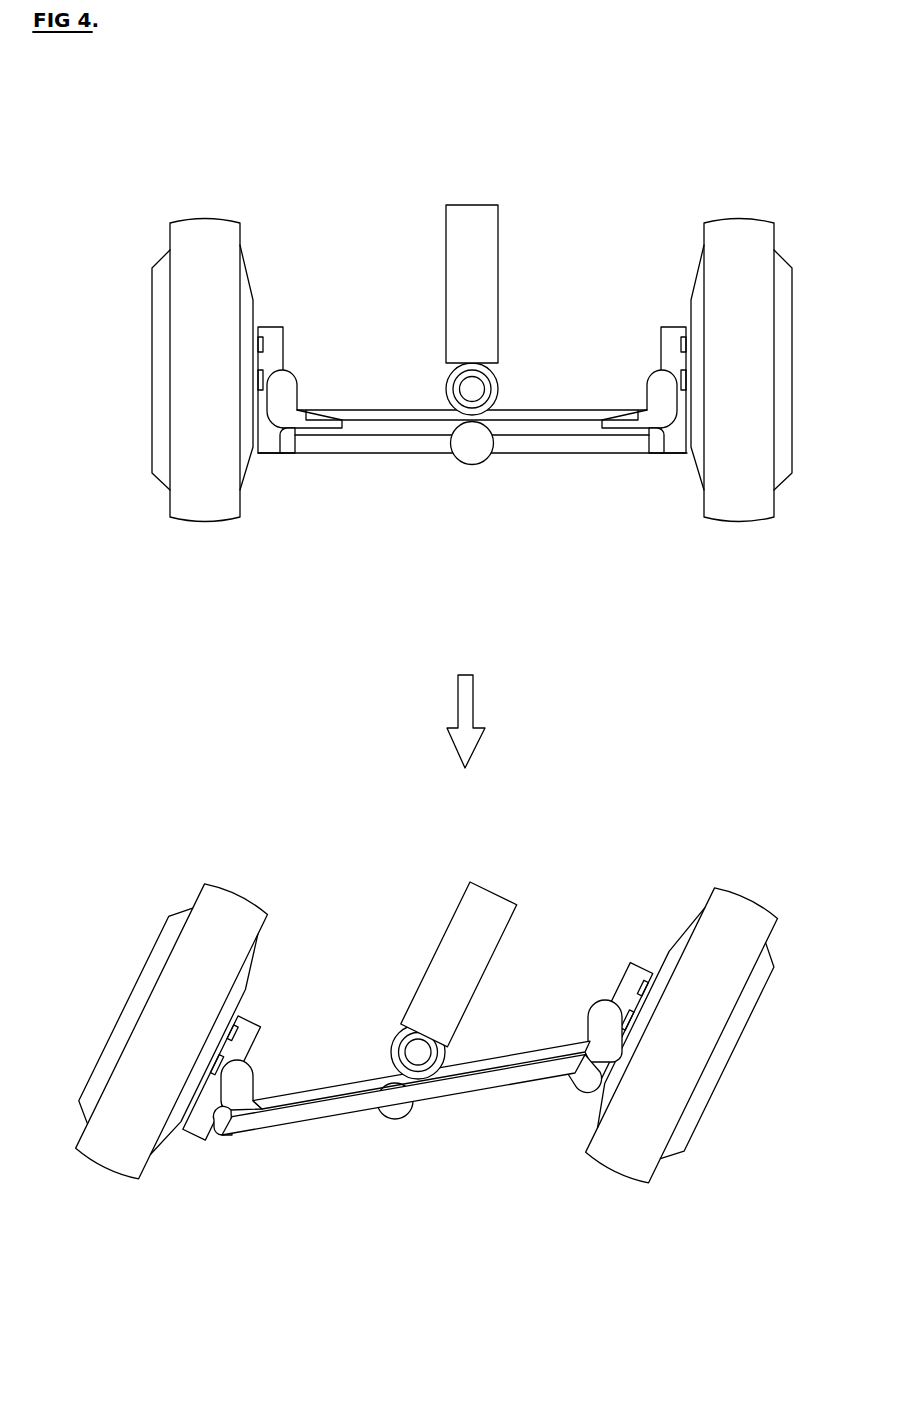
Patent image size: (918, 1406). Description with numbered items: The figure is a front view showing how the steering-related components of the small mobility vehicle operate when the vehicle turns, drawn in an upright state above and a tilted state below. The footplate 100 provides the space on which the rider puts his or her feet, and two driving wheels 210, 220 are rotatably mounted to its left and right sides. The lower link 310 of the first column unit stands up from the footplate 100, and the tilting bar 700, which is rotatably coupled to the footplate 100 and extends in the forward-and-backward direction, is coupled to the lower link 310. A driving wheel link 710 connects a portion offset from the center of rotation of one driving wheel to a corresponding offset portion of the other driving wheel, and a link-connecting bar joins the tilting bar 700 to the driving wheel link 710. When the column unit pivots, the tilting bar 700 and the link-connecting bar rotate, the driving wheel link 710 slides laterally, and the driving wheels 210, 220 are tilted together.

The footplate 100 is at (558, 412).
The driving wheel 210 is at (207, 507).
The driving wheel 220 is at (738, 503).
The lower link 310 is at (470, 218).
The tilting bar 700 is at (472, 391).
The driving wheel link 710 is at (568, 443).